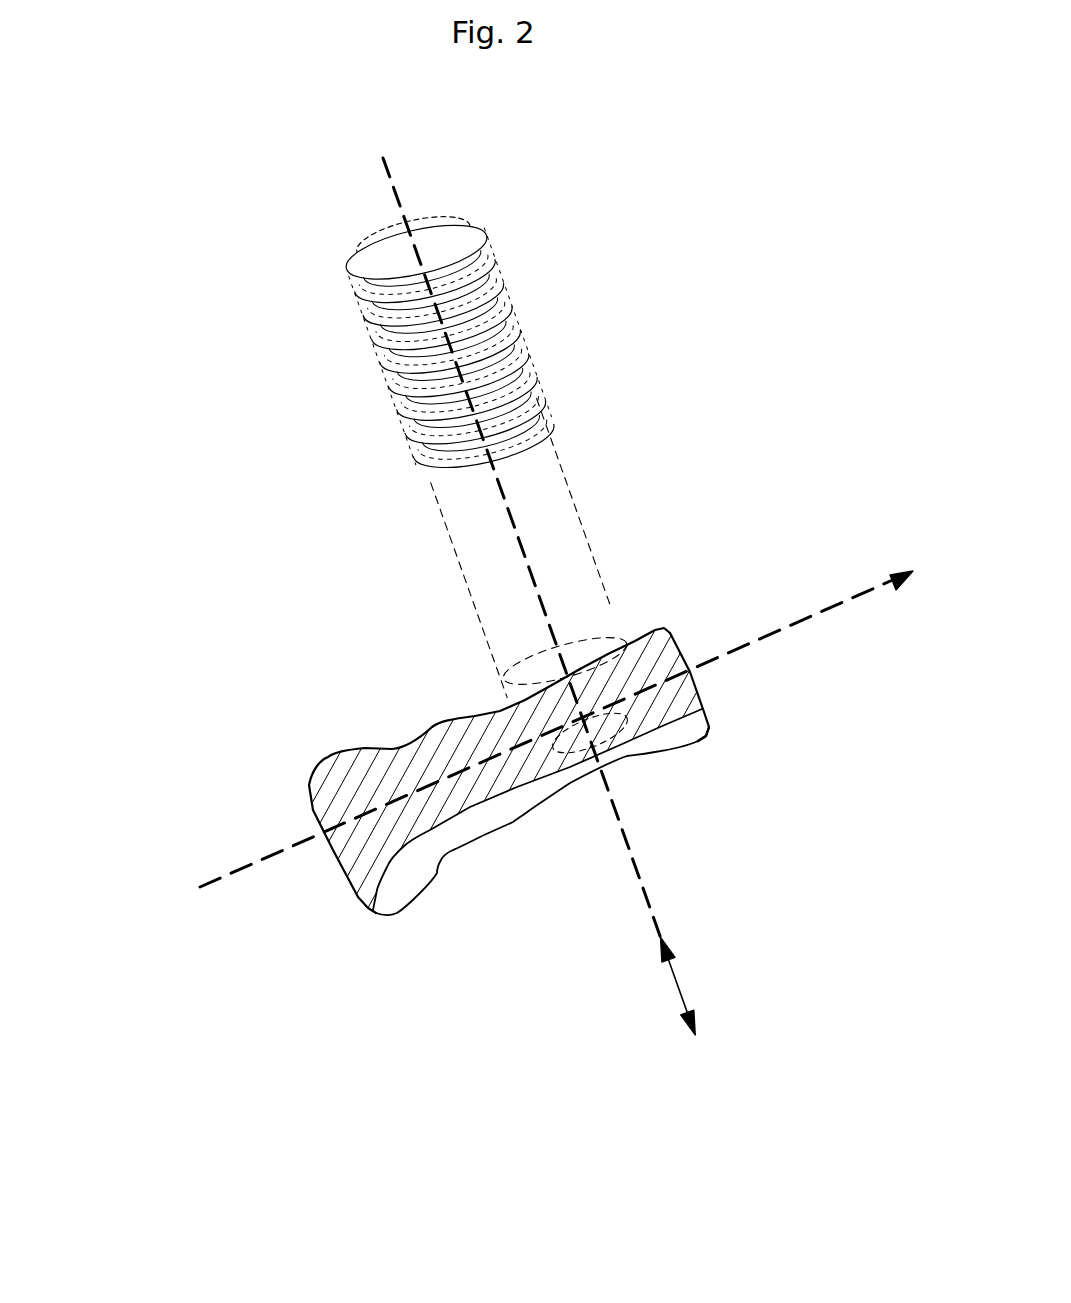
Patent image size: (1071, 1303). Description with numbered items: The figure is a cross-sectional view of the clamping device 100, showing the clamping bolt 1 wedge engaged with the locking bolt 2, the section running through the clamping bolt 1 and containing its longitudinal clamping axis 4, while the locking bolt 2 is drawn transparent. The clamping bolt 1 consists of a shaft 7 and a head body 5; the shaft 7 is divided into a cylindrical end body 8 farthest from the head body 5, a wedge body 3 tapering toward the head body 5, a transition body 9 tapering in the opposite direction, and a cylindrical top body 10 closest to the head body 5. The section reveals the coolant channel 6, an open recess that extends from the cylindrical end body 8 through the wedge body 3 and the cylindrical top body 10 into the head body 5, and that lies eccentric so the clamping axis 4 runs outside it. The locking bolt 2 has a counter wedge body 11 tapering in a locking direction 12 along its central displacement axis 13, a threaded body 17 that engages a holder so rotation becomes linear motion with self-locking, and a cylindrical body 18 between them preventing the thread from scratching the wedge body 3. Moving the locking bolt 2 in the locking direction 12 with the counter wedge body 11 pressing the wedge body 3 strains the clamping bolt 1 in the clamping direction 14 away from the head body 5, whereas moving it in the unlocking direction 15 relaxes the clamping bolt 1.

The clamping device 100 is at (222, 475).
The clamping bolt 1 is at (410, 1017).
The locking bolt 2 is at (712, 432).
The wedge body 3 is at (627, 753).
The longitudinal clamping axis 4 is at (838, 602).
The head body 5 is at (355, 747).
The coolant channel 6 is at (673, 733).
The shaft 7 is at (512, 872).
The cylindrical end body 8 is at (643, 633).
The transition body 9 is at (487, 717).
The cylindrical top body 10 is at (423, 730).
The counter wedge body 11 is at (613, 680).
The locking direction 12 is at (716, 1028).
The central displacement axis 13 is at (637, 863).
The clamping direction 14 is at (556, 729).
The unlocking direction 15 is at (688, 976).
The threaded body 17 is at (473, 320).
The cylindrical body 18 is at (565, 520).